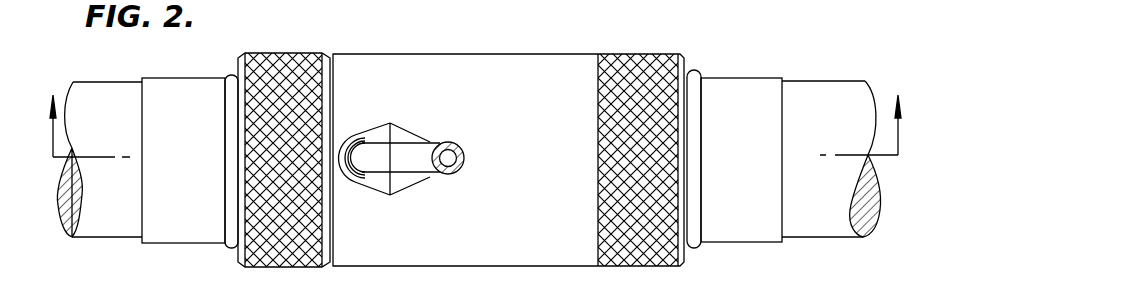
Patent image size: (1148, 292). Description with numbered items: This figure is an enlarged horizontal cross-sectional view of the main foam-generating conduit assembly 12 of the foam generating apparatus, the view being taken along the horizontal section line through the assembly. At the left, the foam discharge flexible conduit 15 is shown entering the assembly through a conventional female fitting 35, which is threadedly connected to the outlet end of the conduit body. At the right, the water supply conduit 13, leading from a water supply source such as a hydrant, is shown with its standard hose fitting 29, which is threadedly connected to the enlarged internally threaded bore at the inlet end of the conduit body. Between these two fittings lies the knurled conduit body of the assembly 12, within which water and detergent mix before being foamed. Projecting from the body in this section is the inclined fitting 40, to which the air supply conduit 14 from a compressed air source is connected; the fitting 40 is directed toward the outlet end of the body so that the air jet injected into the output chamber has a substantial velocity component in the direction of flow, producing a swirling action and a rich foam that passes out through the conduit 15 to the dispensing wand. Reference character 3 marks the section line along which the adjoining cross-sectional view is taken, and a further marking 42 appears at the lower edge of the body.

The section line 3- 3 is at (469, 140).
The main foam-generating conduit assembly 12 is at (682, 50).
The water supply conduit 13 is at (822, 90).
The air supply conduit 14 is at (427, 148).
The flexible conduit 15 is at (103, 223).
The hose fitting 29 is at (737, 92).
The female fitting 35 is at (245, 265).
The inclined fitting 40 is at (357, 138).
The body portion 42 is at (492, 289).